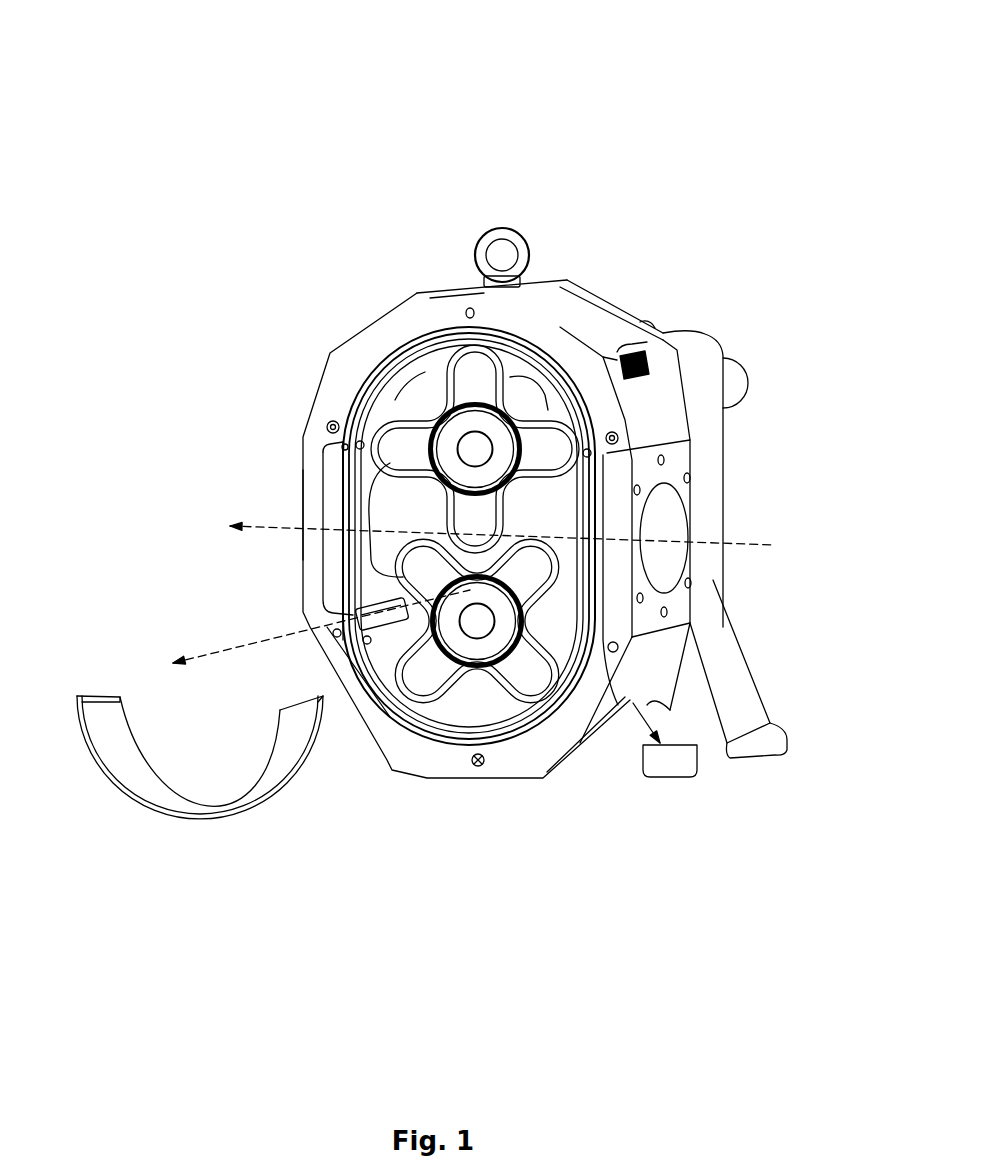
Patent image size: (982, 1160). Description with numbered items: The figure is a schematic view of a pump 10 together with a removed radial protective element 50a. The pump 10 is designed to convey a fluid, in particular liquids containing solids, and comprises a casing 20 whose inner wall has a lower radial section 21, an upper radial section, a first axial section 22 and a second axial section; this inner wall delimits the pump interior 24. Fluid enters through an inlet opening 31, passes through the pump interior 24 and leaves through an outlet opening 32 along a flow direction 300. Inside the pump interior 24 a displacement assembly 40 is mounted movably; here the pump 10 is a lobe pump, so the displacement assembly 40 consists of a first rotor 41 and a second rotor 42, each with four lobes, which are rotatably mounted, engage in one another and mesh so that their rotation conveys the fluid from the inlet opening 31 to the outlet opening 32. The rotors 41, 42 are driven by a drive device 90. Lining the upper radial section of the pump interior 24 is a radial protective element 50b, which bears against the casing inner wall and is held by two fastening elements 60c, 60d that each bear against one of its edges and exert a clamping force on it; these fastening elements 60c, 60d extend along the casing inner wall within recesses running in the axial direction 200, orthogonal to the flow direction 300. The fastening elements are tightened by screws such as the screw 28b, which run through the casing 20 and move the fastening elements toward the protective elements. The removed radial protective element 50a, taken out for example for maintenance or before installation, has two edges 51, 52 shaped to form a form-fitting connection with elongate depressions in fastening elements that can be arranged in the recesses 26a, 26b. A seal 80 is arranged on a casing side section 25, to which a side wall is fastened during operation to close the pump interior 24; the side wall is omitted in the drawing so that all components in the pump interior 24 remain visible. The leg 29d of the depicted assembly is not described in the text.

The pump 10 is at (258, 108).
The casing 20 is at (578, 317).
The lower radial section 21 is at (450, 717).
The first axial section 22 is at (483, 700).
The pump interior 24 is at (487, 725).
The casing side section 25 is at (367, 710).
The recess 26a is at (357, 607).
The recess 26b is at (618, 700).
The screw 28b is at (630, 362).
The support leg 29d is at (675, 760).
The inlet opening 31 is at (652, 556).
The outlet opening 32 is at (292, 506).
The displacement assembly 40 is at (397, 523).
The first rotor 41 is at (463, 372).
The second rotor 42 is at (530, 677).
The removed radial protective element 50a is at (153, 800).
The radial protective element 50b is at (400, 397).
The edge 51 is at (87, 697).
The edge 52 is at (283, 710).
The fastening element 60c is at (340, 440).
The fastening element 60d is at (645, 325).
The seal 80 is at (438, 738).
The drive device 90 is at (733, 383).
The axial direction 200 is at (207, 652).
The flow direction 300 is at (768, 545).